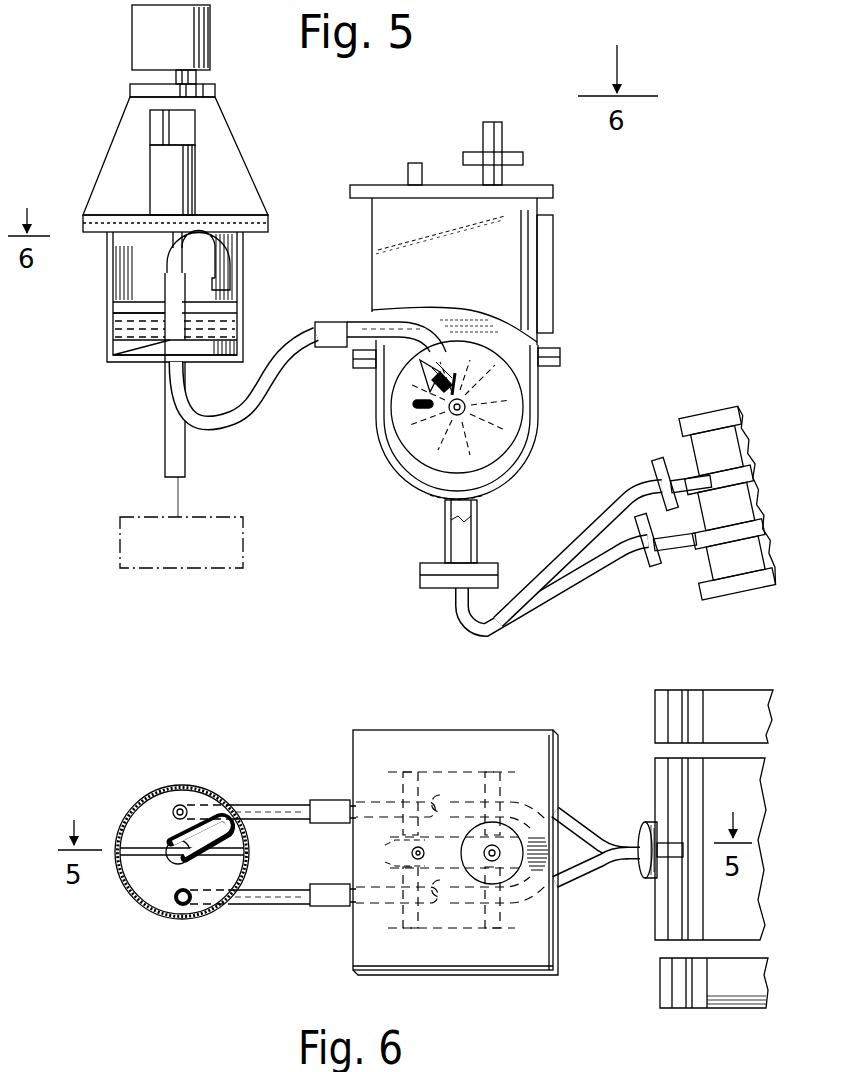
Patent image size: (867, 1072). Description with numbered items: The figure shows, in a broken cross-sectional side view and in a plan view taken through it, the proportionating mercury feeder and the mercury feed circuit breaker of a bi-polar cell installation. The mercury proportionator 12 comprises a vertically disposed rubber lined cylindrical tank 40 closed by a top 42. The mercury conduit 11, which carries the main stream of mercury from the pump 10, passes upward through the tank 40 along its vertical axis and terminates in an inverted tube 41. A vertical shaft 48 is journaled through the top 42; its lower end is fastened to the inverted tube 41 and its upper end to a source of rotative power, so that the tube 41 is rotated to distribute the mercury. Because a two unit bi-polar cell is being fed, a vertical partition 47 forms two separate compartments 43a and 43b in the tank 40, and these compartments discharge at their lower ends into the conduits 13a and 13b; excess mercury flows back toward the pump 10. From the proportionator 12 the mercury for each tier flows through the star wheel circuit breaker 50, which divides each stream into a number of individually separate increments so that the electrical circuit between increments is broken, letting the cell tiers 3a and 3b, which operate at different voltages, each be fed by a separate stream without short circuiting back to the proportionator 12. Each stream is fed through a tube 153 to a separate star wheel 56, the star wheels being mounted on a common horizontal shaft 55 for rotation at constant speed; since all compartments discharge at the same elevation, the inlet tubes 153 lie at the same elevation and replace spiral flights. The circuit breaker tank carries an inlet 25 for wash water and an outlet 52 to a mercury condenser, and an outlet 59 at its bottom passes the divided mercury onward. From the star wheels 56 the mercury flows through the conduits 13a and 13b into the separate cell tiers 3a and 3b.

In FIG. 5, the cell tier 3a is at (748, 440).
In FIG. 5, the cell tier 3b is at (744, 530).
In FIG. 5, the pump 10 is at (120, 548).
In FIG. 5, the mercury conduit 11 is at (168, 442).
In FIG. 5, the mercury proportionator 12 is at (201, 297).
In FIG. 6, the mercury proportionator 12 is at (168, 856).
In FIG. 5, the conduit 13a is at (604, 552).
In FIG. 6, the conduit 13a is at (282, 822).
In FIG. 5, the conduit 13b is at (272, 386).
In FIG. 6, the conduit 13b is at (268, 906).
In FIG. 5, the inlet 25 is at (408, 175).
In FIG. 5, the cylindrical tank 40 is at (246, 320).
In FIG. 6, the cylindrical tank 40 is at (178, 790).
In FIG. 5, the inverted tube 41 is at (218, 262).
In FIG. 6, the inverted tube 41 is at (198, 854).
In FIG. 5, the top 42 is at (252, 220).
In FIG. 5, the compartment 43a is at (135, 328).
In FIG. 6, the compartment 43a is at (195, 800).
In FIG. 6, the compartment 43b is at (170, 906).
In FIG. 5, the vertical partition 47 is at (125, 307).
In FIG. 6, the vertical partition 47 is at (130, 848).
In FIG. 5, the vertical shaft 48 is at (195, 183).
In FIG. 5, the star wheel circuit breaker 50 is at (523, 270).
In FIG. 5, the outlet 52 is at (500, 138).
In FIG. 5, the horizontal shaft 55 is at (462, 416).
In FIG. 5, the star wheel 56 is at (432, 378).
In FIG. 6, the star wheel 56 is at (410, 853).
In FIG. 5, the outlet 59 is at (447, 530).
In FIG. 5, the tube 153 is at (408, 332).
In FIG. 6, the tube 153 is at (354, 790).